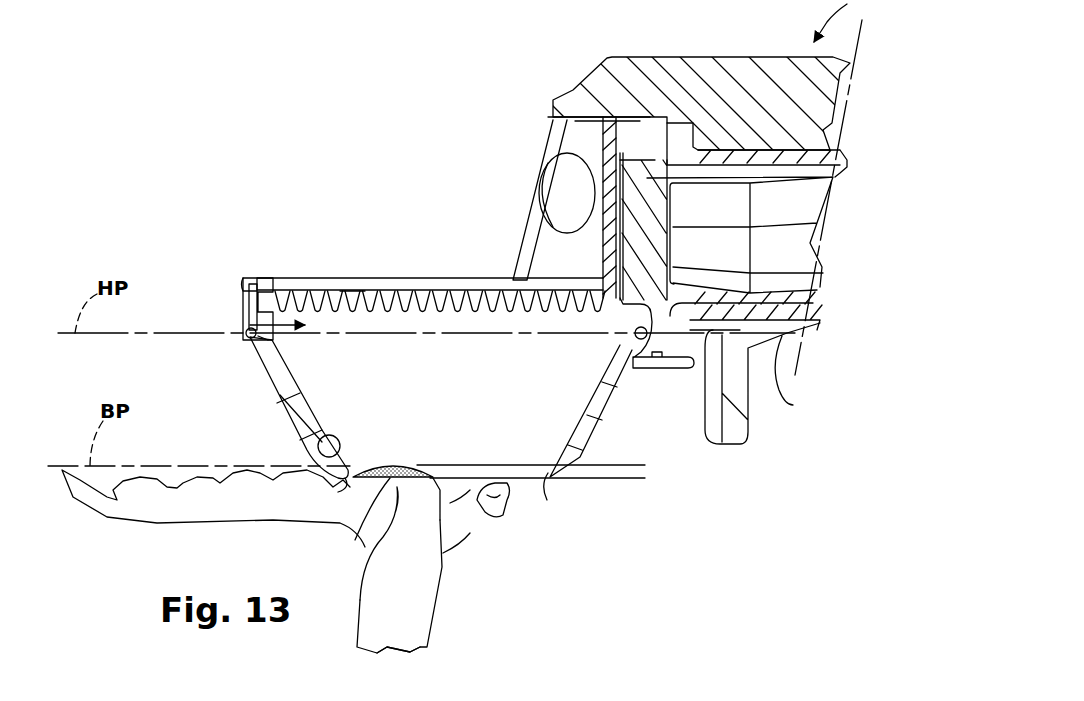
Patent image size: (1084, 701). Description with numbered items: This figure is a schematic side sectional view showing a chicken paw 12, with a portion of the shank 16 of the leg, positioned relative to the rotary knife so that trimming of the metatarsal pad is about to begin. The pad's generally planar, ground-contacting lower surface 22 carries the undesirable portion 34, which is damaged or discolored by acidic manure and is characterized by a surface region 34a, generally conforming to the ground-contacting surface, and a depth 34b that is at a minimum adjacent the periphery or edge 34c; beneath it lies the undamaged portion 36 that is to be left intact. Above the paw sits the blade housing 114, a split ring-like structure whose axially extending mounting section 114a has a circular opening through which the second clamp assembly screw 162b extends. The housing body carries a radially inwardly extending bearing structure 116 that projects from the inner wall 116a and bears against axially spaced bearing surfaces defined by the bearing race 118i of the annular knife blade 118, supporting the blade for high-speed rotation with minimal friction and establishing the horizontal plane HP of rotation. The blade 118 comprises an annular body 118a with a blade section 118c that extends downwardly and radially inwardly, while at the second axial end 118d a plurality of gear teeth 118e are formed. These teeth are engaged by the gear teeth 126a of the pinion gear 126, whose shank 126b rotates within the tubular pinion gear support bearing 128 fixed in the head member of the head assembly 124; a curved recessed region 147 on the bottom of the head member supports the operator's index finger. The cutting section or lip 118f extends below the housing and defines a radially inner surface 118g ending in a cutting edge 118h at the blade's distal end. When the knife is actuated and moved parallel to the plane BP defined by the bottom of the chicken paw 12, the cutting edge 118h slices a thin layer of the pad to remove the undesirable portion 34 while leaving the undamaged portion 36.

The chicken paw 12 is at (455, 582).
The shank 16 is at (435, 630).
The lower surface 22 is at (370, 462).
The undesirable portion 34 is at (400, 456).
The surface region 34a is at (410, 462).
The depth 34b is at (632, 423).
The periphery or edge 34c is at (356, 527).
The undamaged portion 36 is at (355, 540).
The blade housing 114 is at (313, 275).
The mounting section 114a is at (516, 234).
The bearing structure 116 is at (246, 340).
The inner wall 116a is at (252, 287).
The annular knife blade 118 is at (278, 420).
The annular body 118a is at (620, 410).
The blade section 118c is at (324, 422).
The second axial end 118d is at (243, 330).
The gear teeth 118e is at (352, 292).
The cutting section or lip 118f is at (273, 373).
The radially inner surface 118g is at (318, 438).
The cutting edge 118h is at (348, 483).
The bearing race 118i is at (266, 334).
The head assembly 124 is at (547, 120).
The pinion gear 126 is at (645, 205).
The gear teeth 126a is at (628, 358).
The shank 126b is at (797, 170).
The pinion gear support bearing 128 is at (738, 147).
The curved recessed region 147 is at (790, 395).
The second clamp assembly screw 162b is at (566, 186).